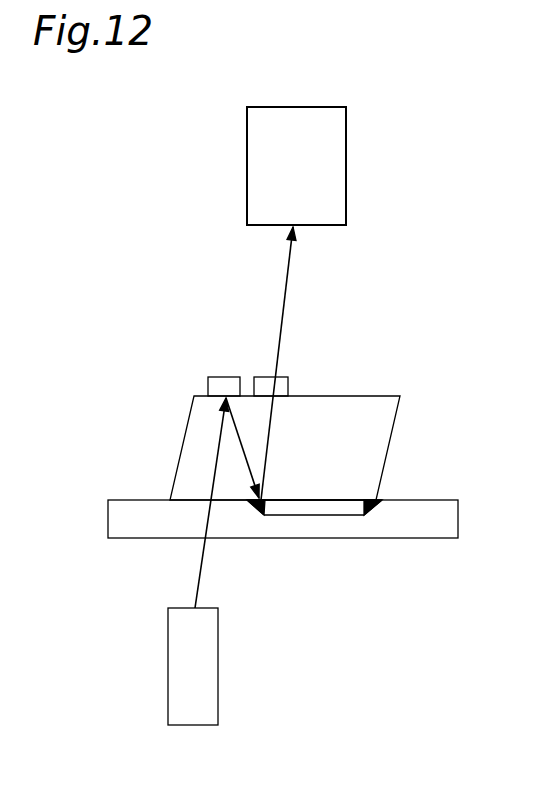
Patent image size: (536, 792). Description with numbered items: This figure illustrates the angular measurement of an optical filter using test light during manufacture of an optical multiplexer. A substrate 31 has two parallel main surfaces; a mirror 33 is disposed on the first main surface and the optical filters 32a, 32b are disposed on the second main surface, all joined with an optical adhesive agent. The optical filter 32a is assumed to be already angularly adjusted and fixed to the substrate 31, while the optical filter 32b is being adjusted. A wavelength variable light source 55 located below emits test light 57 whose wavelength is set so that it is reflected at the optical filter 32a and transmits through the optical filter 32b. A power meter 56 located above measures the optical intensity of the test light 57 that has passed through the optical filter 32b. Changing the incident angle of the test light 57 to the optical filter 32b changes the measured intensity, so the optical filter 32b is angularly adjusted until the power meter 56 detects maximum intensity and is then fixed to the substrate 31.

The power meter 56 is at (346, 168).
The substrate 31 is at (186, 450).
The optical filter 32a is at (226, 377).
The optical filter 32b is at (289, 386).
The mirror 33 is at (313, 508).
The wavelength variable light source 55 is at (187, 673).
The test light 57 is at (198, 572).